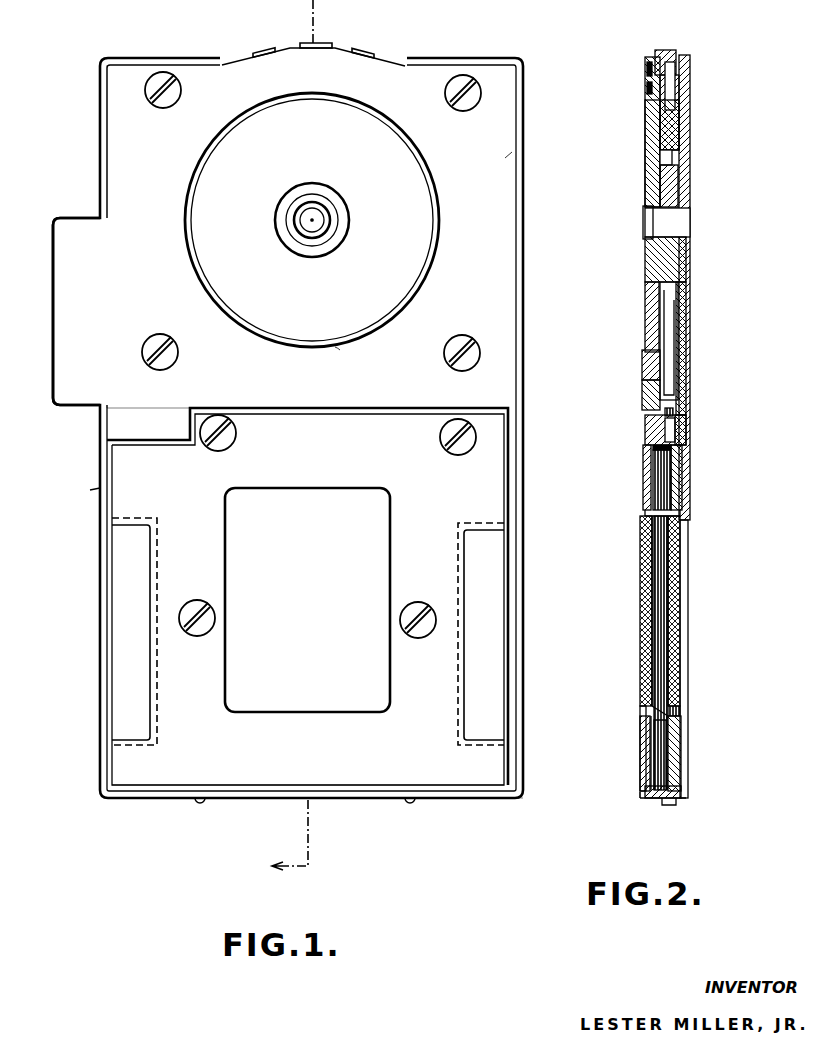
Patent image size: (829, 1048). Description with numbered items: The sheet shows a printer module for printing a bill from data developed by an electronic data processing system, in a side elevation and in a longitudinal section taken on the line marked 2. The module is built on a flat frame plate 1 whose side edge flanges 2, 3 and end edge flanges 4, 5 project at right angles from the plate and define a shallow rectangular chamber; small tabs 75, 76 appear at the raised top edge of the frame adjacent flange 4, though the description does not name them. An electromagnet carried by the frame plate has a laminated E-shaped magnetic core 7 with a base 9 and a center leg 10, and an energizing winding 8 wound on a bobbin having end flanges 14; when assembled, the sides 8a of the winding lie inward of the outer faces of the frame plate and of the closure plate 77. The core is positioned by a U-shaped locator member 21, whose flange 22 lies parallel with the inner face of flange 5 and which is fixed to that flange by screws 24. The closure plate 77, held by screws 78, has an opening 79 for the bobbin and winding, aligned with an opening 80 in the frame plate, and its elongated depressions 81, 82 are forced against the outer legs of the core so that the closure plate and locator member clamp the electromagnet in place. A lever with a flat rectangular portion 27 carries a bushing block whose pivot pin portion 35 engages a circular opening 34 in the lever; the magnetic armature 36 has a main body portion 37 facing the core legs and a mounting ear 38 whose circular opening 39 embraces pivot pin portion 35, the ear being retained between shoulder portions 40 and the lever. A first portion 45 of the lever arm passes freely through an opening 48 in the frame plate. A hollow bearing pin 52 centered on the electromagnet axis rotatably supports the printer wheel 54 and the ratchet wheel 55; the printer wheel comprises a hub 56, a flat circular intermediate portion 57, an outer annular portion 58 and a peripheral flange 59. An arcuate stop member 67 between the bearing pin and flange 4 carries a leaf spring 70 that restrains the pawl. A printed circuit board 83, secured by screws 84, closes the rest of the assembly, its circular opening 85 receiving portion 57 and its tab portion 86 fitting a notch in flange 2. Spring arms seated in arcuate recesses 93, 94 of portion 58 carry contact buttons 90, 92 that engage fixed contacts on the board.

In FIG. 2, the frame plate 1 is at (698, 267).
In FIG. 1, the side edge flange 2 is at (80, 489).
In FIG. 1, the side edge flange 3 is at (516, 438).
In FIG. 1, the end edge flange 4 is at (178, 58).
In FIG. 2, the end edge flange 4 is at (684, 74).
In FIG. 1, the end edge flange 5 is at (482, 802).
In FIG. 2, the end edge flange 5 is at (648, 800).
In FIG. 2, the magnetic core 7 is at (652, 751).
In FIG. 2, the energizing winding 8 is at (680, 648).
In FIG. 2, the sides of the winding 8a is at (680, 632).
In FIG. 2, the base 9 is at (656, 768).
In FIG. 2, the center leg 10 is at (660, 572).
In FIG. 2, the end flange 14 is at (672, 710).
In FIG. 2, the locator member 21 is at (681, 745).
In FIG. 2, the flange 22 is at (676, 790).
In FIG. 2, the screw 24 is at (674, 806).
In FIG. 2, the flat rectangular portion 27 is at (683, 459).
In FIG. 2, the circular opening 34 is at (686, 440).
In FIG. 2, the pivot pin portion 35 is at (672, 430).
In FIG. 2, the magnetic armature 36 is at (650, 502).
In FIG. 2, the main body portion 37 is at (648, 483).
In FIG. 2, the mounting ear 38 is at (652, 462).
In FIG. 2, the circular opening 39 is at (645, 443).
In FIG. 2, the shoulder portion 40 is at (648, 420).
In FIG. 2, the first portion 45 is at (683, 374).
In FIG. 2, the opening 48 is at (676, 416).
In FIG. 1, the bearing pin 52 is at (328, 214).
In FIG. 2, the bearing pin 52 is at (689, 222).
In FIG. 1, the printer wheel 54 is at (436, 220).
In FIG. 2, the printer wheel 54 is at (640, 316).
In FIG. 2, the ratchet wheel 55 is at (679, 180).
In FIG. 1, the hub 56 is at (292, 233).
In FIG. 2, the hub 56 is at (684, 252).
In FIG. 1, the flat circular intermediate portion 57 is at (394, 263).
In FIG. 2, the flat circular intermediate portion 57 is at (650, 157).
In FIG. 2, the outer annular portion 58 is at (672, 100).
In FIG. 2, the peripheral flange 59 is at (677, 64).
In FIG. 2, the arcuate stop member 67 is at (672, 158).
In FIG. 2, the arcuate leaf spring 70 is at (684, 112).
In FIG. 1, the tab 75 is at (262, 54).
In FIG. 1, the tab 76 is at (318, 48).
In FIG. 2, the tab 76 is at (662, 52).
In FIG. 1, the closure plate 77 is at (310, 770).
In FIG. 2, the closure plate 77 is at (647, 735).
In FIG. 1, the screw 78 is at (236, 439).
In FIG. 1, the opening 79 is at (226, 570).
In FIG. 2, the opening 79 is at (645, 715).
In FIG. 2, the opening 80 is at (674, 718).
In FIG. 1, the elongated depression 81 is at (128, 710).
In FIG. 1, the elongated depression 82 is at (490, 596).
In FIG. 1, the printed circuit board 83 is at (510, 150).
In FIG. 2, the printed circuit board 83 is at (652, 57).
In FIG. 1, the screw 84 is at (168, 108).
In FIG. 1, the circular opening 85 is at (340, 348).
In FIG. 1, the projecting tab portion 86 is at (53, 325).
In FIG. 2, the contact button 90 is at (647, 92).
In FIG. 2, the contact button 92 is at (646, 376).
In FIG. 2, the arcuate recess 93 is at (647, 70).
In FIG. 2, the arcuate recess 94 is at (654, 394).